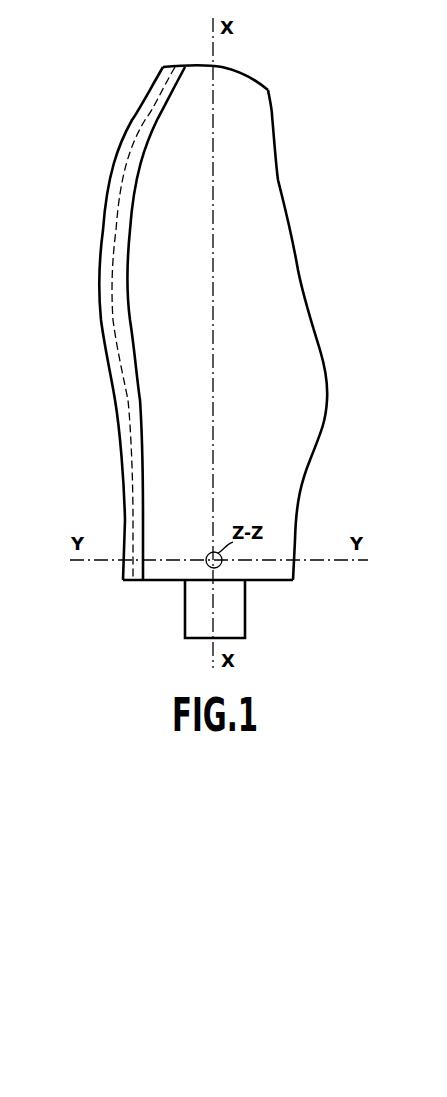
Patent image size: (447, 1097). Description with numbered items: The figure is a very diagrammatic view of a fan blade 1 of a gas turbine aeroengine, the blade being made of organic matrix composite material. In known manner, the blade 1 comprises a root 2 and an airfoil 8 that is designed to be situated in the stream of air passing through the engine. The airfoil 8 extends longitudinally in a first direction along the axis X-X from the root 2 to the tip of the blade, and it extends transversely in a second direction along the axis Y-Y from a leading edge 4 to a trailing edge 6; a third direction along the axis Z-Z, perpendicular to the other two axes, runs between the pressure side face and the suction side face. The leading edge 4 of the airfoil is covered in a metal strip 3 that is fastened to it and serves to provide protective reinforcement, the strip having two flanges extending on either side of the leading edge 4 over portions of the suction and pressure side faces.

The fan blade 1 is at (312, 230).
The root 2 is at (228, 612).
The metal strip 3 is at (143, 147).
The leading edge 4 is at (108, 312).
The trailing edge 6 is at (305, 293).
The airfoil 8 is at (252, 140).